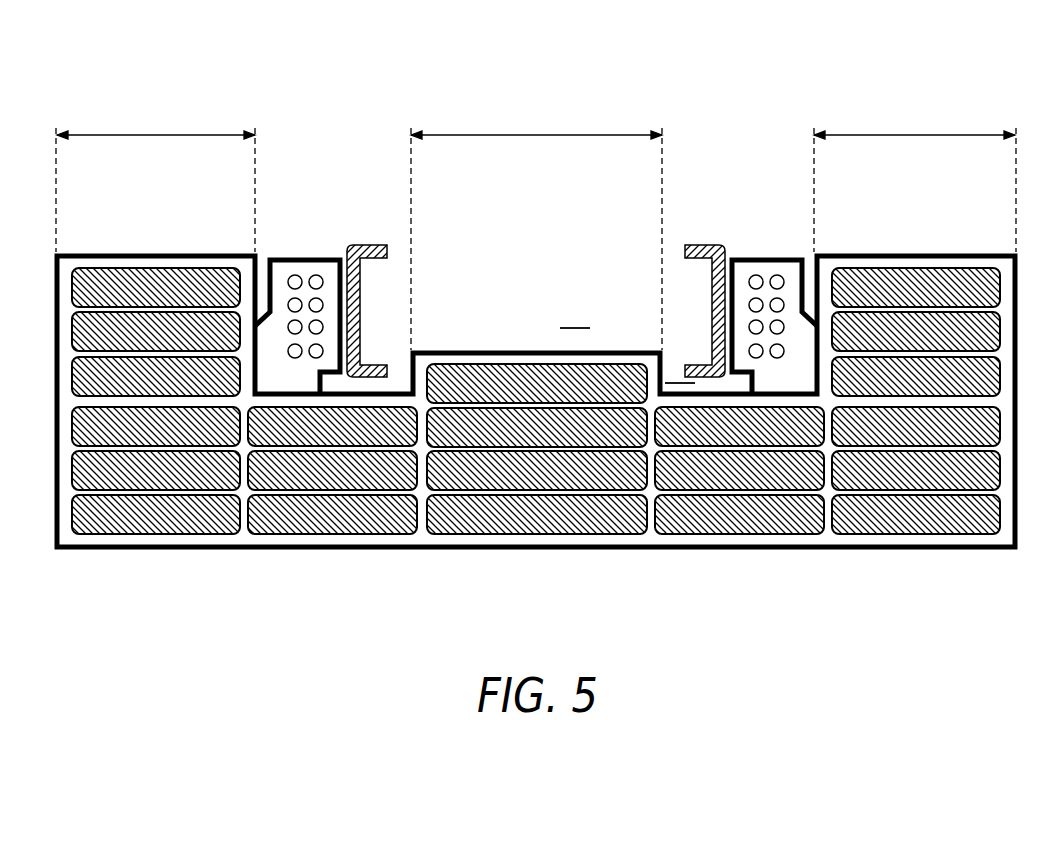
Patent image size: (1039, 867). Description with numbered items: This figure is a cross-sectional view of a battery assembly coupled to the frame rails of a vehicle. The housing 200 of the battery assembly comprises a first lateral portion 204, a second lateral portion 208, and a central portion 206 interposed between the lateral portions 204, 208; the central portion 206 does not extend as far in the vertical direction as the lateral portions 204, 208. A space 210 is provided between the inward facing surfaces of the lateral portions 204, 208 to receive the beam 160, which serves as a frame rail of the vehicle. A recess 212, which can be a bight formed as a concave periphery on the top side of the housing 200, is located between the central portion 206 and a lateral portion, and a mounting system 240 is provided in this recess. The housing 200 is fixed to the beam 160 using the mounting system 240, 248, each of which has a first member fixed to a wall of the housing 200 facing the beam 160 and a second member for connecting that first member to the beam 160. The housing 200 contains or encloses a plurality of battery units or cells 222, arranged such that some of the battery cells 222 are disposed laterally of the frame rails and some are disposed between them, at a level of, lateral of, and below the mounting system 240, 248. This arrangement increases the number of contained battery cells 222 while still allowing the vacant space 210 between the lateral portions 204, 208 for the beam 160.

The housing 200 is at (988, 94).
The first lateral portion 204 is at (157, 134).
The central portion 206 is at (537, 134).
The second lateral portion 208 is at (915, 134).
The mounting system 248 is at (318, 257).
The mounting system 240 is at (775, 257).
The beam 160 is at (358, 308).
The space 210 is at (575, 327).
The recess 212 is at (679, 381).
The battery units or cells 222 is at (533, 534).